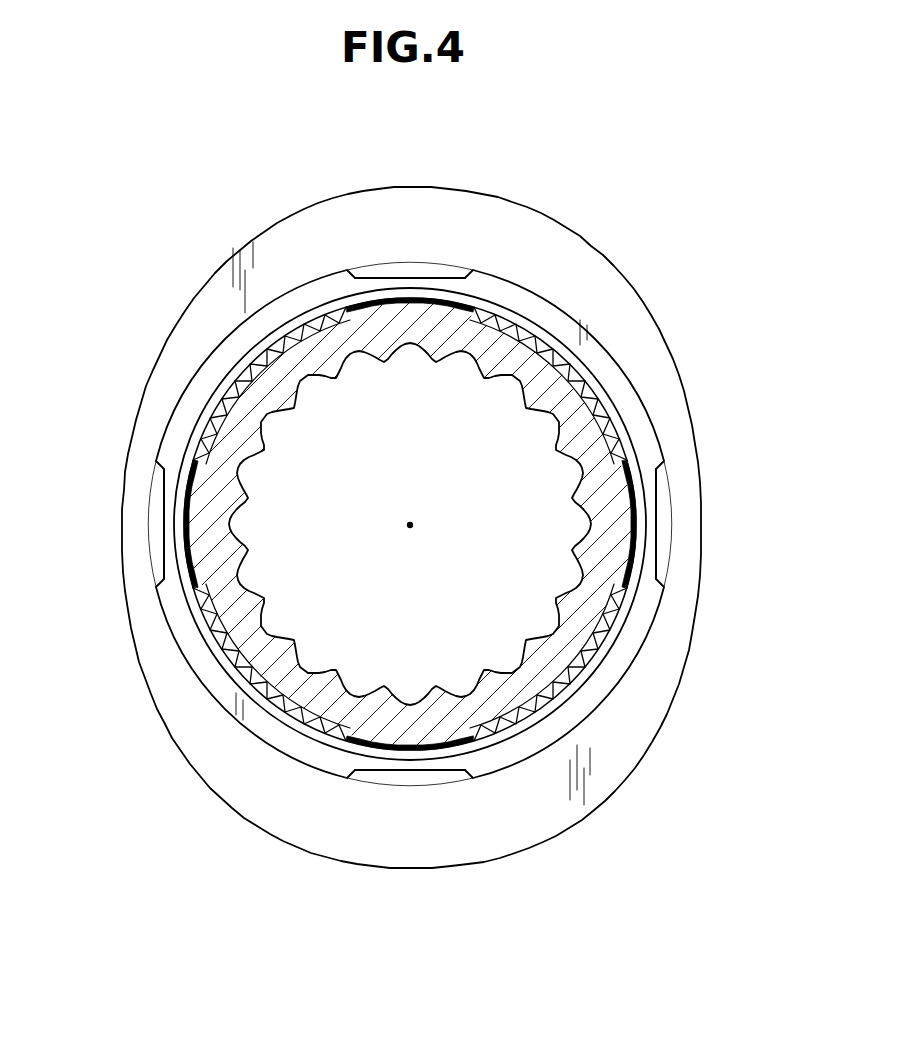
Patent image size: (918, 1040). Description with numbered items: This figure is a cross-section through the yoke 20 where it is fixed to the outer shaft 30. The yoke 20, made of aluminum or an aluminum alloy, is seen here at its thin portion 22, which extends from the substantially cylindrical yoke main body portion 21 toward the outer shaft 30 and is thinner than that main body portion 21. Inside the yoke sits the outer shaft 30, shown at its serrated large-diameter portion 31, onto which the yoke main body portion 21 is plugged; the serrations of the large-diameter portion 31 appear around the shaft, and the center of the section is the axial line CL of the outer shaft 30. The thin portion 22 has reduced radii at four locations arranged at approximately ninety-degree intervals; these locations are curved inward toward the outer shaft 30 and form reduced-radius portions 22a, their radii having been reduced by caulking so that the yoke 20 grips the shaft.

The yoke 20 is at (507, 188).
The yoke main body portion 21 is at (329, 226).
The thin portion 22 is at (185, 390).
The reduced-radius portions 22a is at (420, 268).
The outer shaft 30 is at (554, 332).
The large-diameter portion 31 is at (240, 365).
The axial line CL is at (408, 522).